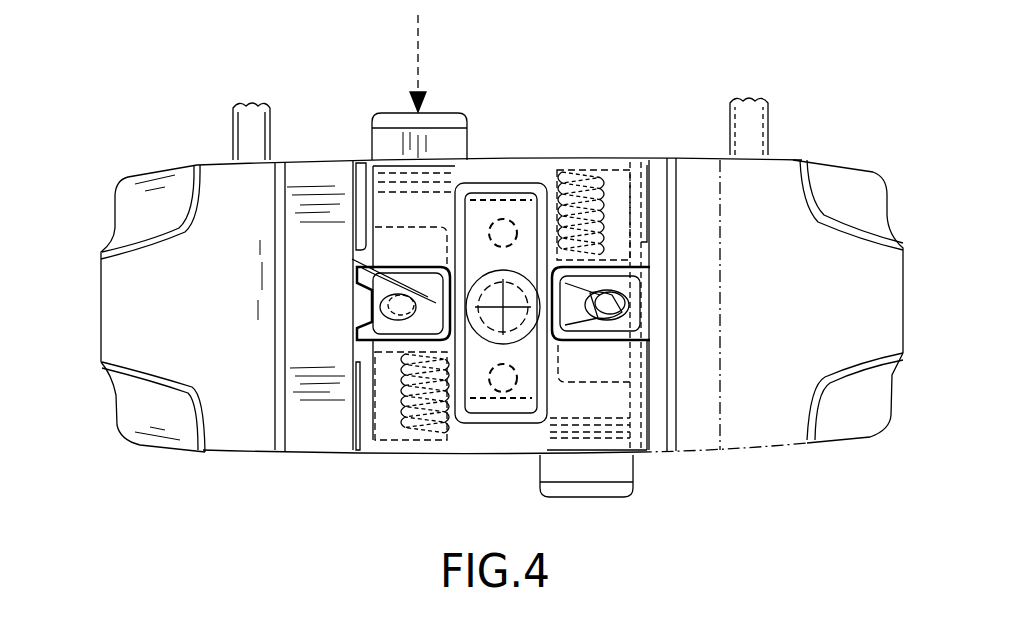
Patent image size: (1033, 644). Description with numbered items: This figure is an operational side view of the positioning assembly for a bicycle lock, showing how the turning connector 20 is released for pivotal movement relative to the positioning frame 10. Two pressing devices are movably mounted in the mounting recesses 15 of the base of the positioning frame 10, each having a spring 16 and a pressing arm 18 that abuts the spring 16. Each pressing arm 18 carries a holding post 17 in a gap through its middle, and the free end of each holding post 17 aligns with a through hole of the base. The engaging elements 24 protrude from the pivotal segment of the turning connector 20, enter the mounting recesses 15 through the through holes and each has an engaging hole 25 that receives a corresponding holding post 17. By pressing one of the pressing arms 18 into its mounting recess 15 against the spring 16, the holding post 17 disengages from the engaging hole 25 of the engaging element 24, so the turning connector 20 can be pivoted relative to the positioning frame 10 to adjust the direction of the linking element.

The positioning frame 10 is at (593, 140).
The mounting recess 15 is at (623, 331).
The spring 16 is at (583, 172).
The holding post 17 is at (375, 312).
The pressing arm 18 is at (398, 137).
The turning connector 20 is at (191, 128).
The engaging element 24 is at (450, 342).
The engaging hole 25 is at (352, 259).